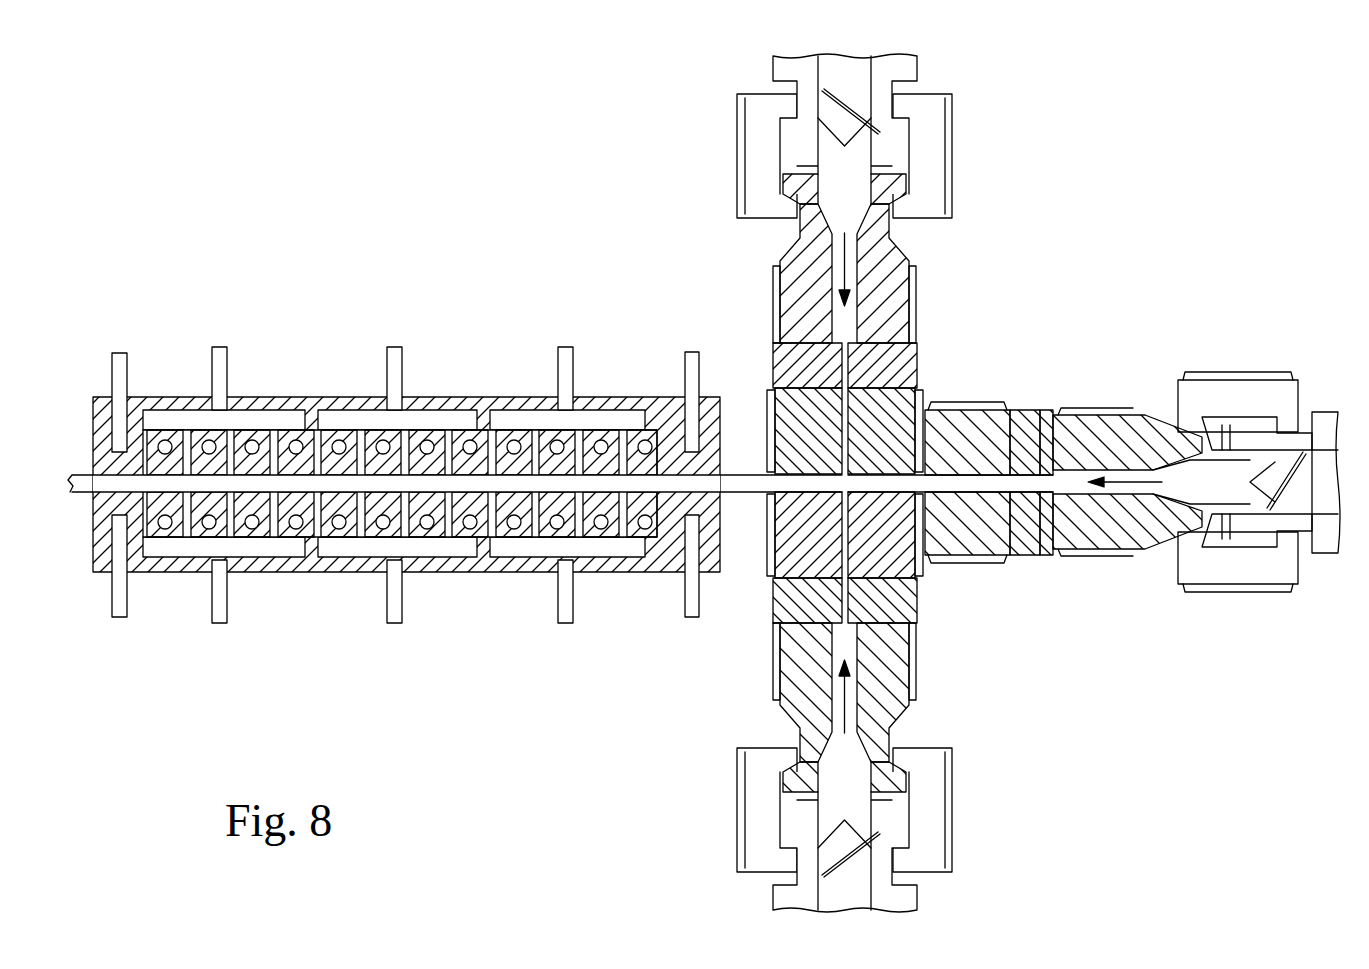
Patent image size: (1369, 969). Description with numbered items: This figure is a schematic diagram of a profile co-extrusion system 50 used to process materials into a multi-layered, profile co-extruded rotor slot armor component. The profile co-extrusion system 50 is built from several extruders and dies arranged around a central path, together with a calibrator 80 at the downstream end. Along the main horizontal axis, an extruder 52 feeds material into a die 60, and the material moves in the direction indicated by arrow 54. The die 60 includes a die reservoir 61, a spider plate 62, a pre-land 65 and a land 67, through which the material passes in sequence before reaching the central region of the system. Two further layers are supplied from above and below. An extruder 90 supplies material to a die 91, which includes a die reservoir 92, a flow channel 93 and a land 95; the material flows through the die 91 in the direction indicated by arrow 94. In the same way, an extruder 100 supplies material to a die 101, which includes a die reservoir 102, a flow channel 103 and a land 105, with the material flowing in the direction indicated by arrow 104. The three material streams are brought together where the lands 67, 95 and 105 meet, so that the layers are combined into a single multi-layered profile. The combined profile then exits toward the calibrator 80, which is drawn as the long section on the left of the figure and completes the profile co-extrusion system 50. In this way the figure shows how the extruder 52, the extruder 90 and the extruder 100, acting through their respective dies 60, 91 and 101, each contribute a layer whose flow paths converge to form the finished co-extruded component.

The profile co-extrusion system 50 is at (1118, 233).
The extruder 52 is at (1340, 601).
The arrow 54 is at (1153, 433).
The die 60 is at (1063, 508).
The die reservoir 61 is at (1104, 586).
The spider plate 62 is at (1048, 415).
The pre-land 65 is at (1028, 415).
The land 67 is at (977, 417).
The calibrator 80 is at (718, 618).
The extruder 90 is at (983, 47).
The die 91 is at (762, 460).
The die reservoir 92 is at (873, 212).
The flow channel 93 is at (910, 367).
The arrow 94 is at (843, 270).
The land 95 is at (845, 431).
The extruder 100 is at (983, 748).
The die 101 is at (762, 500).
The die reservoir 102 is at (882, 740).
The flow channel 103 is at (918, 598).
The arrow 104 is at (873, 710).
The land 105 is at (845, 535).